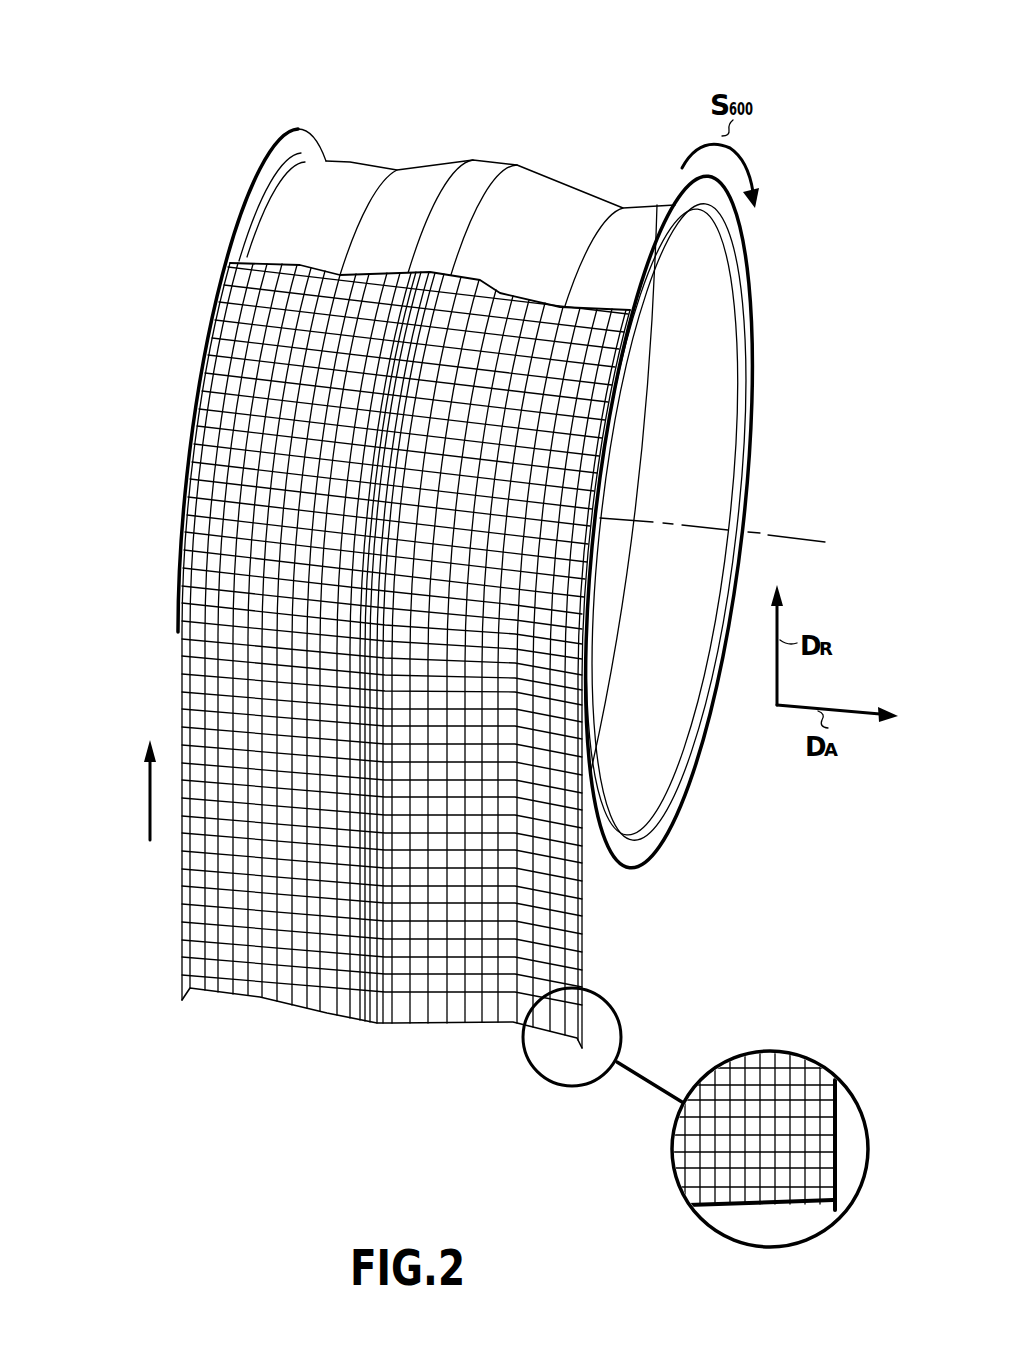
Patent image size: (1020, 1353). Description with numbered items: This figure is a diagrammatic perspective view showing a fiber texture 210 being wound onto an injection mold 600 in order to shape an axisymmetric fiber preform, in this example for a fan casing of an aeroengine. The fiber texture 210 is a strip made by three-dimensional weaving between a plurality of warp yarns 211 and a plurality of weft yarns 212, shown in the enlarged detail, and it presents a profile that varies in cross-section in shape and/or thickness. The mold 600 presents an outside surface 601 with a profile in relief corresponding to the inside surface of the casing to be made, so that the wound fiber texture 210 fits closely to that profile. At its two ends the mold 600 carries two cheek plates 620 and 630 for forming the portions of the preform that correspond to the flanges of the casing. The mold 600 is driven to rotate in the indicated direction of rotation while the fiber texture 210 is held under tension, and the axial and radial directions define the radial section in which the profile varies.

The injection mold 600 is at (153, 86).
The outside surface 601 is at (425, 176).
The cheek plate 620 is at (303, 142).
The cheek plate 630 is at (693, 196).
The fiber texture 210 is at (145, 922).
The warp yarns 211 is at (753, 1198).
The weft yarns 212 is at (692, 1173).